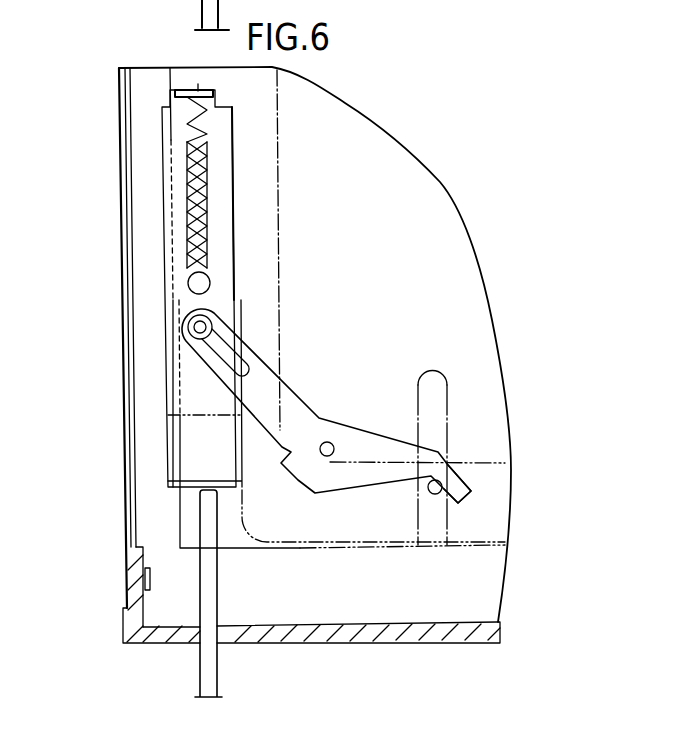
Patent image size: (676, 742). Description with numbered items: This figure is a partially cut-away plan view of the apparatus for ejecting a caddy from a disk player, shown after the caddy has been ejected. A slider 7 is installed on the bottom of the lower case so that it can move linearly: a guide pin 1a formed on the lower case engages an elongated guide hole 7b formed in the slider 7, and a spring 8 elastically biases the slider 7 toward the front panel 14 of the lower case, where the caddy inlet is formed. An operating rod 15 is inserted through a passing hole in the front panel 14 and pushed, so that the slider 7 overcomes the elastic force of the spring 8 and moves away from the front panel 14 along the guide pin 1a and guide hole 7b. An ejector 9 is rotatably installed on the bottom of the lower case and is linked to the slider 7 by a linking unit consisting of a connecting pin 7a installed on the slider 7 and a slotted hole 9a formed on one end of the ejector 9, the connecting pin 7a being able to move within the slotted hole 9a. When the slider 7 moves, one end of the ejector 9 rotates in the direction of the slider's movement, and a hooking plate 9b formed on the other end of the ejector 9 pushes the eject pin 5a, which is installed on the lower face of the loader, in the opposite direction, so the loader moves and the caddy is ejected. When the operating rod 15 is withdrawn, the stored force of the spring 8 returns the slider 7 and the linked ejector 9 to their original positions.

The spring 8 is at (183, 97).
The elongated guide hole 7b is at (190, 192).
The guide pin 1a is at (192, 276).
The connecting pin 7a is at (188, 318).
The slotted hole 9a is at (187, 341).
The slider 7 is at (182, 448).
The front panel 14 is at (130, 632).
The operating rod 15 is at (207, 659).
The ejector 9 is at (282, 432).
The eject pin 5a is at (434, 494).
The hooking plate 9b is at (473, 491).